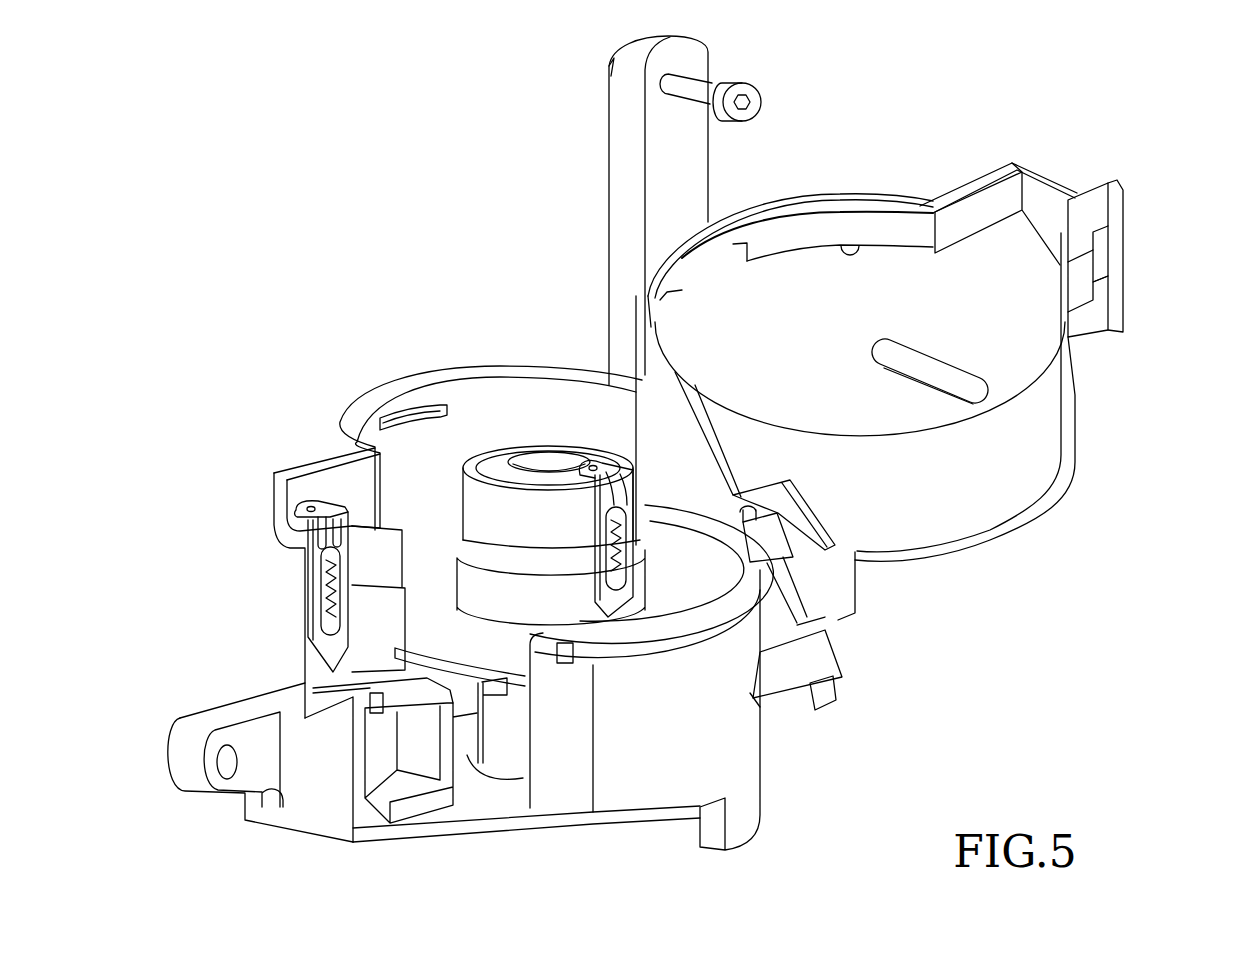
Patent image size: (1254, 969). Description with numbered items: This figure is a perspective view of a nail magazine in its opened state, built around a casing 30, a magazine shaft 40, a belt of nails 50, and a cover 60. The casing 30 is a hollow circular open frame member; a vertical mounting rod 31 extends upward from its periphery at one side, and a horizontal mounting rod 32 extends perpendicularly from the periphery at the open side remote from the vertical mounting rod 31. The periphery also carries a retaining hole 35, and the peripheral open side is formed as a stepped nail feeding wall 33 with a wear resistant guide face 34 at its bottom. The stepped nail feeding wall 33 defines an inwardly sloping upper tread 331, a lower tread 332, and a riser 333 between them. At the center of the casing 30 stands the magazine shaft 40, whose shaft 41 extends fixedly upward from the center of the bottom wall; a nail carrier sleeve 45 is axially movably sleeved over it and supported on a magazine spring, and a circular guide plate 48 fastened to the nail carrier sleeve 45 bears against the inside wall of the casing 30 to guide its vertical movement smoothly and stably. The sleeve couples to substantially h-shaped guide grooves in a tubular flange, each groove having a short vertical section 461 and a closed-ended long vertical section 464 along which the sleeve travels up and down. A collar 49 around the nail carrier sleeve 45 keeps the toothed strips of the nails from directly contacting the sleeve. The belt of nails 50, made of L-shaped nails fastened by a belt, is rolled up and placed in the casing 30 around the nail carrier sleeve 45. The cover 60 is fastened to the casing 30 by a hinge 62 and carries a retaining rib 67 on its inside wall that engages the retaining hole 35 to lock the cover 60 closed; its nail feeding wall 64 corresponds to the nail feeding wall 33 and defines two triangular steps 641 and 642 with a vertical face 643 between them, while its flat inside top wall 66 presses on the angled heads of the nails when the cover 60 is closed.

The casing 30 is at (660, 795).
The vertical mounting rod 31 is at (695, 158).
The horizontal mounting rod 32 is at (205, 723).
The stepped nail feeding wall 33 is at (398, 516).
The inwardly sloping upper tread 331 is at (365, 525).
The lower tread 332 is at (367, 636).
The riser 333 is at (363, 574).
The wear resistant guide face 34 is at (347, 690).
The retaining hole 35 is at (432, 405).
The magazine shaft 40 is at (543, 428).
The shaft 41 is at (565, 455).
The nail carrier sleeve 45 is at (488, 462).
The circular guide plate 48 is at (441, 653).
The collar 49 is at (473, 562).
The short vertical section 461 is at (497, 692).
The long vertical section 464 is at (478, 762).
The belt of nails 50 is at (323, 547).
The cover 60 is at (1077, 412).
The hinge 62 is at (843, 657).
The nail feeding wall 64 is at (1100, 197).
The triangular step 641 is at (1097, 221).
The triangular step 642 is at (1097, 318).
The vertical face 643 is at (1098, 275).
The flat inside top wall 66 is at (841, 250).
The retaining rib 67 is at (705, 262).